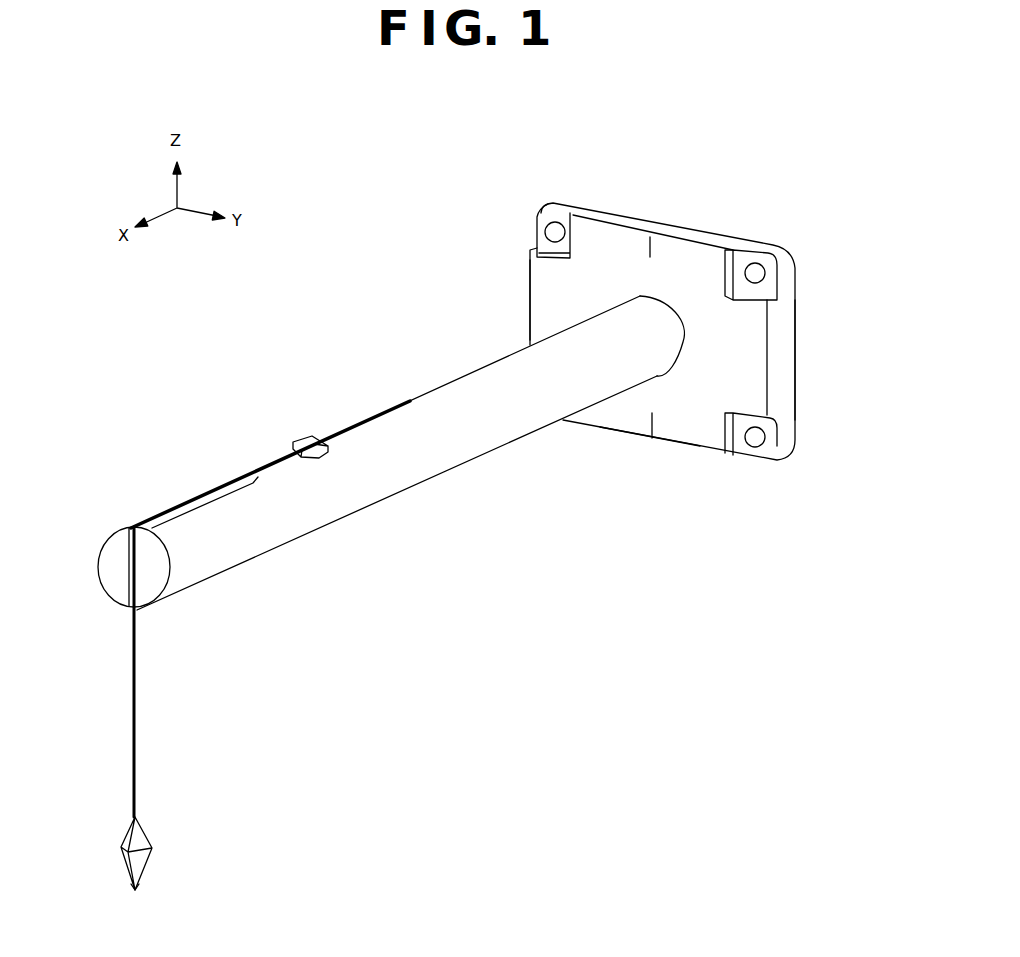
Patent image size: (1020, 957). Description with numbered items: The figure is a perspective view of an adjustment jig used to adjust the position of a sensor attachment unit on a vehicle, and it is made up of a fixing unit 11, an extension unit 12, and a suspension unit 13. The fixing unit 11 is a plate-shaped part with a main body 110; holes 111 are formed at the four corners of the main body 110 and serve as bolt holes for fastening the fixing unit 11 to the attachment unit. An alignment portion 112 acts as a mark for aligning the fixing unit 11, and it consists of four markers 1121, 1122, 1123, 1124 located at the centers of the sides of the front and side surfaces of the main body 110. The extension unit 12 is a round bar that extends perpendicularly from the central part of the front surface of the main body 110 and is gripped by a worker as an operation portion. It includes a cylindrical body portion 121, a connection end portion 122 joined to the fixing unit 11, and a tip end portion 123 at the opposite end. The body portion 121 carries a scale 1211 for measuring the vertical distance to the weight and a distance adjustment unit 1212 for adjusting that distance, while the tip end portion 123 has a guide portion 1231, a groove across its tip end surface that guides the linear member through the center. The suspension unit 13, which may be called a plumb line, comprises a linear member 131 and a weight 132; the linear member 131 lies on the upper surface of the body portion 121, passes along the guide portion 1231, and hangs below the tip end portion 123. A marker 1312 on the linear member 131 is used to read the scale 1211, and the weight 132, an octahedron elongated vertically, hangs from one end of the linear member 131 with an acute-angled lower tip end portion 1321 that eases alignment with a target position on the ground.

The fixing unit 11 is at (591, 181).
The main body 110 is at (622, 207).
The holes 111 is at (546, 210).
The alignment portion 112 is at (815, 293).
The marker 1121 is at (658, 232).
The marker 1122 is at (750, 362).
The marker 1123 is at (648, 420).
The marker 1124 is at (543, 313).
The extension unit 12 is at (421, 363).
The body portion 121 is at (381, 503).
The scale 1211 is at (219, 489).
The distance adjustment unit 1212 is at (298, 438).
The connection end portion 122 is at (682, 336).
The tip end portion 123 is at (102, 543).
The guide portion 1231 is at (127, 587).
The suspension unit 13 is at (201, 709).
The linear member 131 is at (138, 751).
The marker 1312 is at (190, 497).
The weight 132 is at (163, 849).
The tip end portion 1321 is at (137, 888).